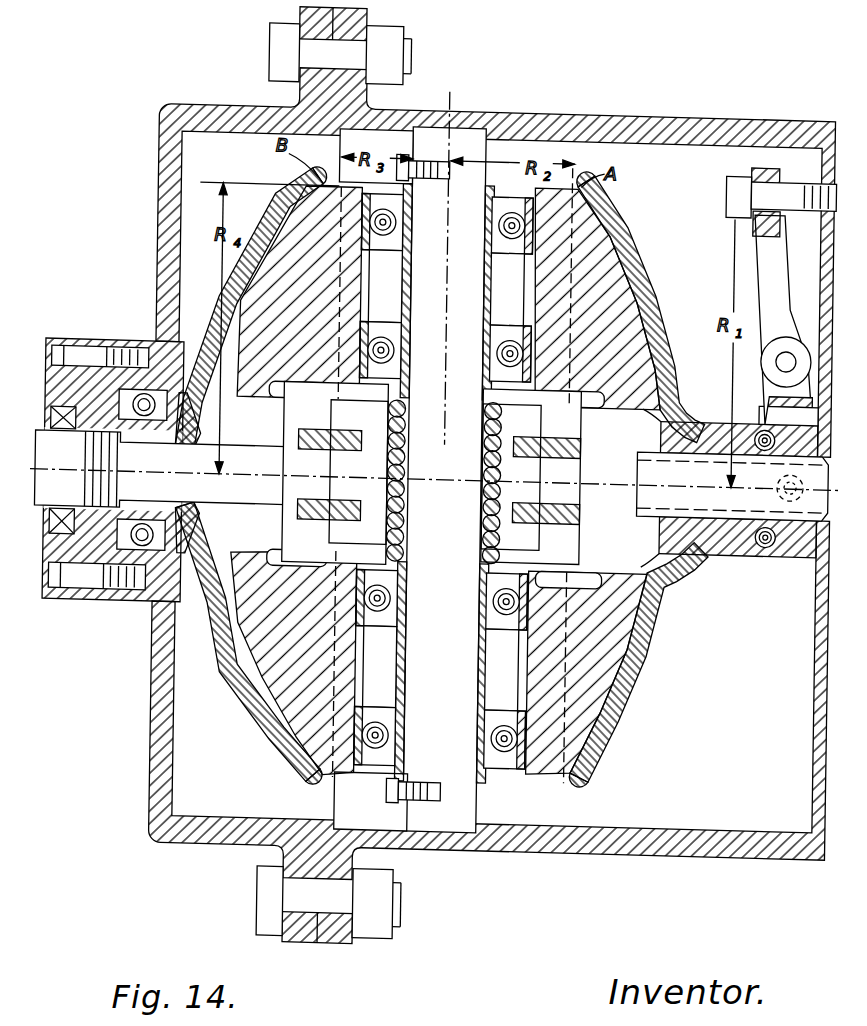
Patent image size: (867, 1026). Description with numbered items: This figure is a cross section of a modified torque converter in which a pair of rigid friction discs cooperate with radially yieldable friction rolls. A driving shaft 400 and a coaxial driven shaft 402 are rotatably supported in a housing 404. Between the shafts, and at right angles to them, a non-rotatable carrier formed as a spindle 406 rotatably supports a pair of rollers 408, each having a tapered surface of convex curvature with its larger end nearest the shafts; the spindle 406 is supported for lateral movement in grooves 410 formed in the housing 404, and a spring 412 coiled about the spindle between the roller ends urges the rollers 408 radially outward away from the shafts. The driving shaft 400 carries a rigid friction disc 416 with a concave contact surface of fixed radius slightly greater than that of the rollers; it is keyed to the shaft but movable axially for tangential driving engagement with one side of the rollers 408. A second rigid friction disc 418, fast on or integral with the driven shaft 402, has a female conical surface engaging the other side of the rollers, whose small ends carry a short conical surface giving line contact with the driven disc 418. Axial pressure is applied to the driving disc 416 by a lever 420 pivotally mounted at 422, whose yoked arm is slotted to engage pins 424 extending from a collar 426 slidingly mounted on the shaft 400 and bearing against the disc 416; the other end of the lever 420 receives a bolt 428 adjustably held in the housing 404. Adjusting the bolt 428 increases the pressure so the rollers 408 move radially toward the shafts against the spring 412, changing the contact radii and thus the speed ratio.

The driving shaft 400 is at (698, 549).
The driven shaft 402 is at (159, 471).
The housing 404 is at (676, 113).
The spindle 406 is at (472, 144).
The rollers 408 is at (603, 281).
The grooves 410 is at (516, 130).
The spring 412 is at (499, 429).
The rigid friction disc 416 is at (622, 236).
The second rigid friction disc 418 is at (268, 205).
The lever 420 is at (753, 284).
The pivot 422 is at (775, 353).
The pins 424 is at (733, 486).
The collar 426 is at (795, 551).
The bolt 428 is at (734, 165).